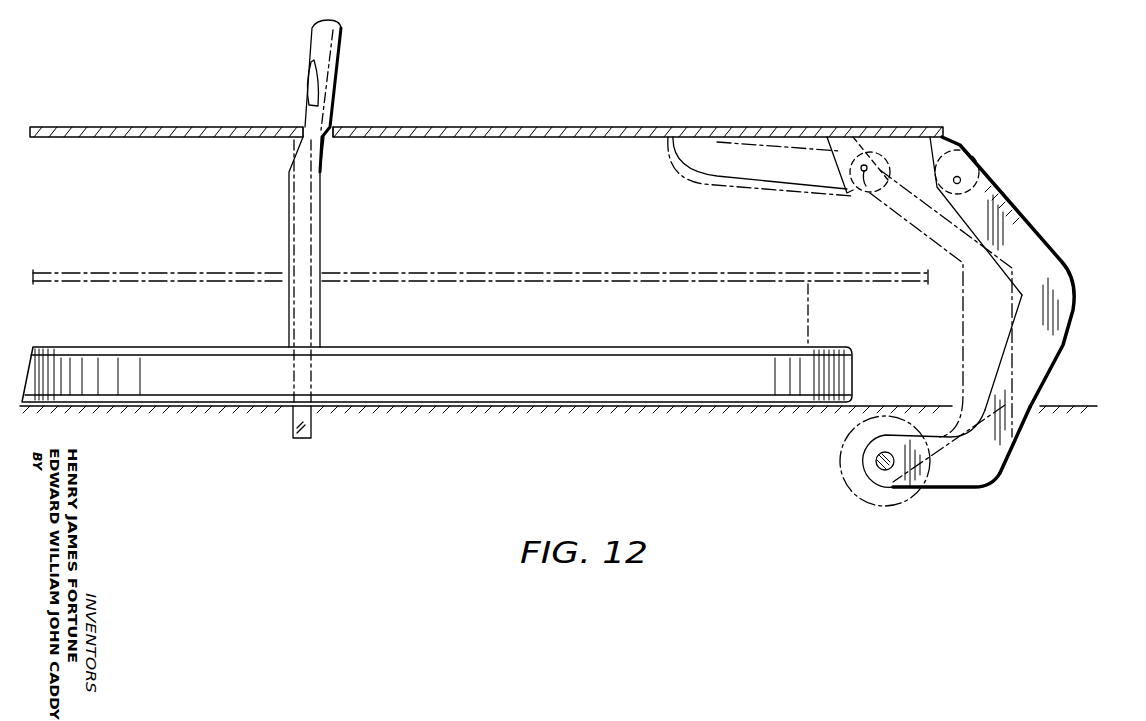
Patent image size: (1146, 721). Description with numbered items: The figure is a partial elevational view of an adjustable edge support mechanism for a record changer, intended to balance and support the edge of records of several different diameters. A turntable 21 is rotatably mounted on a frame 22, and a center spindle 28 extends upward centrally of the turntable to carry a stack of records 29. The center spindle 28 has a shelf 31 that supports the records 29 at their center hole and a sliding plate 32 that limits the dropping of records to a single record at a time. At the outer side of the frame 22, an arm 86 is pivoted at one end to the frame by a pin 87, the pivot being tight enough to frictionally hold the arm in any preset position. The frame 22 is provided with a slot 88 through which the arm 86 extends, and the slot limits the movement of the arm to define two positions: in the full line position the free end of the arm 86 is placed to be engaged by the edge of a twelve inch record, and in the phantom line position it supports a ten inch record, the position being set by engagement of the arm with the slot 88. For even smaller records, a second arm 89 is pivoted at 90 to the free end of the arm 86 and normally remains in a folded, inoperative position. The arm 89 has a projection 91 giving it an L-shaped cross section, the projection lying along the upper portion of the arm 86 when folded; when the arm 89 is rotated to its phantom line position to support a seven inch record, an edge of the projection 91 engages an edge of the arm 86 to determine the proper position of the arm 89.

The turntable 21 is at (636, 352).
The frame 22 is at (778, 413).
The center spindle 28 is at (322, 236).
The records 29 is at (455, 126).
The shelf 31 is at (305, 127).
The sliding plate 32 is at (334, 119).
The arm 86 is at (990, 478).
The pin 87 is at (890, 468).
The slot 88 is at (1033, 412).
The arm 89 is at (741, 150).
The pivot 90 is at (862, 196).
The projection 91 is at (760, 186).